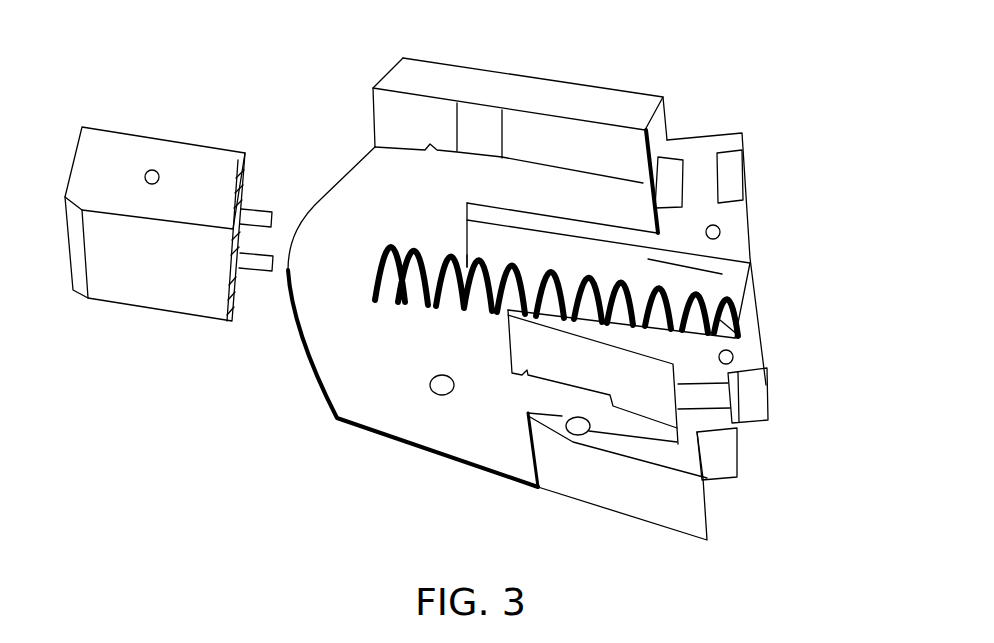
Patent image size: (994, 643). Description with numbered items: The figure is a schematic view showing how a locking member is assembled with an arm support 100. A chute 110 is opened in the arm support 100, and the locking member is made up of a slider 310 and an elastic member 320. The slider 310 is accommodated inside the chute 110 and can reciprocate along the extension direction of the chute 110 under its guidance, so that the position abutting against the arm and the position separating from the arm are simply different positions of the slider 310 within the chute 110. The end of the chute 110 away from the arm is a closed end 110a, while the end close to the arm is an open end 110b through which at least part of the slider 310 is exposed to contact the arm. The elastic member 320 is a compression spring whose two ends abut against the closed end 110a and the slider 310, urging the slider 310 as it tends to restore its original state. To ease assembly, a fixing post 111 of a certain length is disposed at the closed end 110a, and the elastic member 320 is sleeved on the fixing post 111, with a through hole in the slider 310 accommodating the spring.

The arm support 100 is at (557, 110).
The chute 110 is at (565, 267).
The closed end 110a is at (742, 326).
The open end 110b is at (484, 338).
The fixing post 111 is at (672, 320).
The slider 310 is at (122, 152).
The elastic member 320 is at (423, 300).